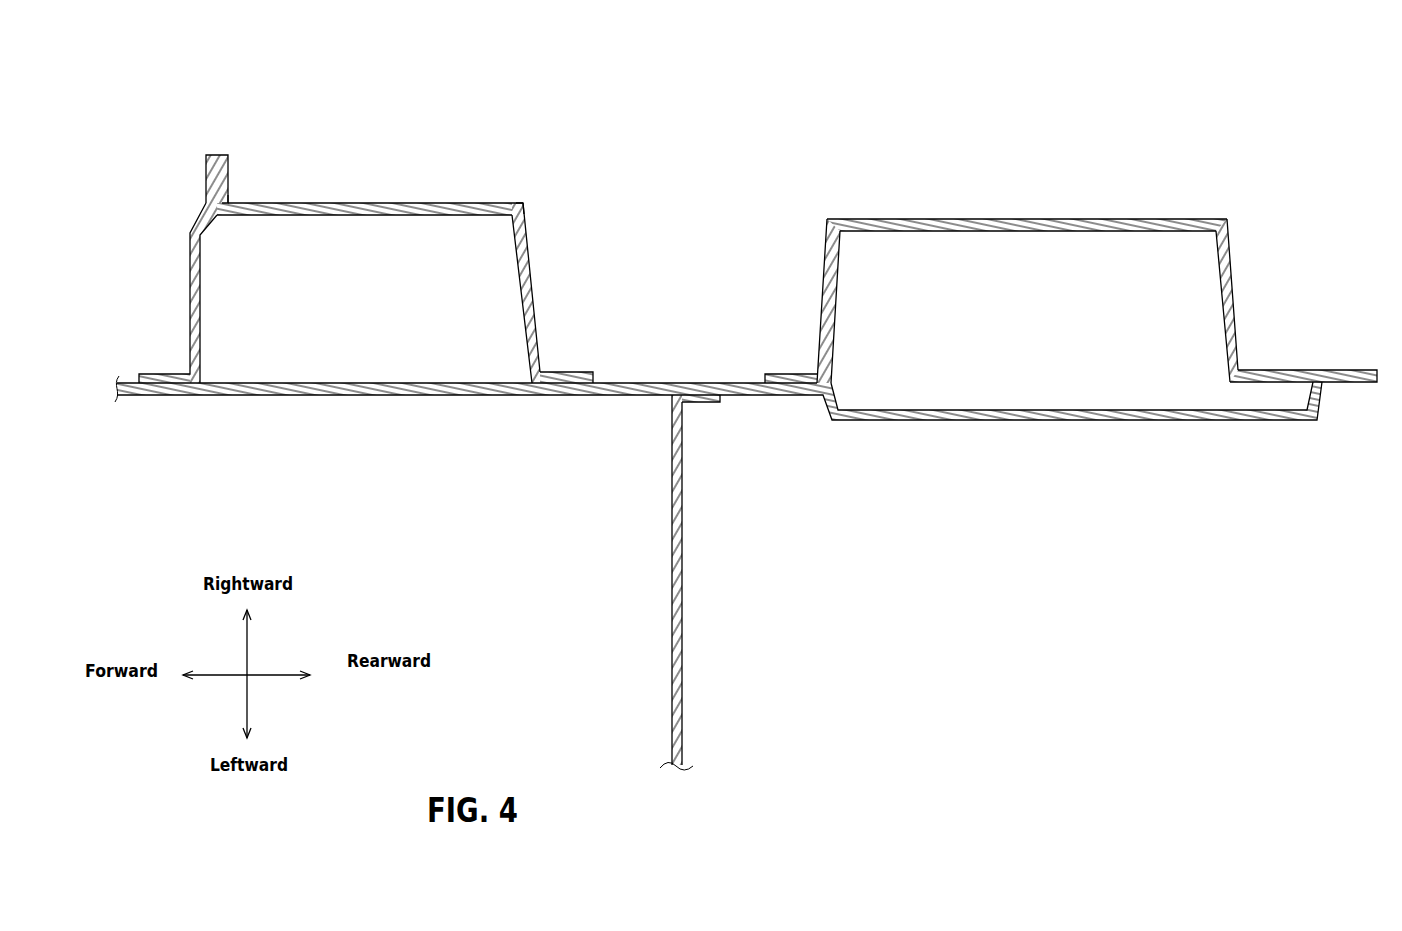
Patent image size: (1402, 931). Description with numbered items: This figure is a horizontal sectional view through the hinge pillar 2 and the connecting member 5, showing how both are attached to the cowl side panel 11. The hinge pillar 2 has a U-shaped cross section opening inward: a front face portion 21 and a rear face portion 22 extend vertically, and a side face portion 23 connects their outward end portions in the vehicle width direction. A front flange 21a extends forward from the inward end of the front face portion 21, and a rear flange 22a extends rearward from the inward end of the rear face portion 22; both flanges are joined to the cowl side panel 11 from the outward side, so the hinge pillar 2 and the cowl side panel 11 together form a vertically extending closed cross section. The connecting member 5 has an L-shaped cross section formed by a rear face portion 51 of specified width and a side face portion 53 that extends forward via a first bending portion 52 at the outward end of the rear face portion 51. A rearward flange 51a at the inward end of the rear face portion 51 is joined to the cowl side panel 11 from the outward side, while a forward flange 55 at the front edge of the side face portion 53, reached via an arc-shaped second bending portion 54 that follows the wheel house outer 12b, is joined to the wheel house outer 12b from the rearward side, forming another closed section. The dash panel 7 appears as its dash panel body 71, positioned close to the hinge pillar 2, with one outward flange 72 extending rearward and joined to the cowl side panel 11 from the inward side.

The hinge pillar 2 is at (1048, 249).
The front face portion 21 is at (818, 297).
The front flange 21a is at (789, 374).
The rear face portion 22 is at (1233, 302).
The rear flange 22a is at (1337, 370).
The side face portion 23 is at (960, 219).
The connecting member 5 is at (397, 234).
The rear face portion 51 is at (533, 273).
The rearward flange 51a is at (560, 373).
The first bending portion 52 is at (523, 203).
The side face portion 53 is at (380, 203).
The second bending portion 54 is at (228, 203).
The forward flange 55 is at (228, 158).
The dash panel 7 is at (727, 582).
The dash panel body 71 is at (683, 604).
The outward flange 72 is at (701, 403).
The cowl side panel 11 is at (388, 396).
The wheel house outer 12b is at (190, 277).